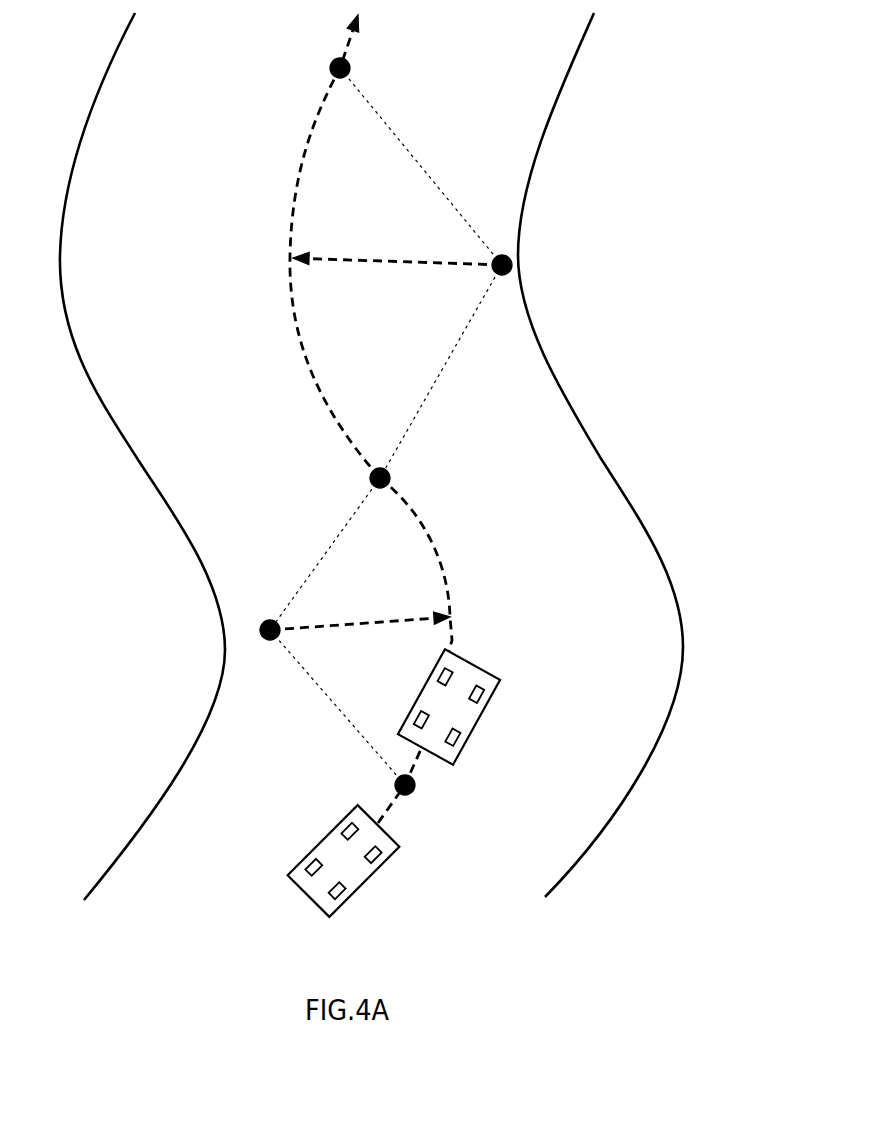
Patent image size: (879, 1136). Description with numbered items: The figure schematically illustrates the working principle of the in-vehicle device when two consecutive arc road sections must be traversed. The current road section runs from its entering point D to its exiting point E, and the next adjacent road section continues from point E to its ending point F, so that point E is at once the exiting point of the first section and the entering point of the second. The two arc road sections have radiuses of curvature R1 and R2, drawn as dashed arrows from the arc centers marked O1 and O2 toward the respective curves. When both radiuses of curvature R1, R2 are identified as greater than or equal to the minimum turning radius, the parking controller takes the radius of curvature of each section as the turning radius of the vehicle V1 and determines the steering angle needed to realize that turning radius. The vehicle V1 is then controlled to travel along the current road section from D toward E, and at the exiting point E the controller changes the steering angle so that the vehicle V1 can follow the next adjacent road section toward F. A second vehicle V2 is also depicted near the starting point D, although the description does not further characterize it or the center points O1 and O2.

The ending point of the next adjacent road section F is at (319, 65).
The exiting point of the current road section E is at (403, 476).
The starting point of the current road section D is at (433, 787).
The first arc center O1 is at (261, 607).
The second arc center O2 is at (530, 265).
The radius of curvature of the current arc road section R1 is at (360, 606).
The radius of curvature of the next adjacent arc road section R2 is at (397, 245).
The vehicle V1 is at (449, 706).
The second vehicle V2 is at (344, 861).